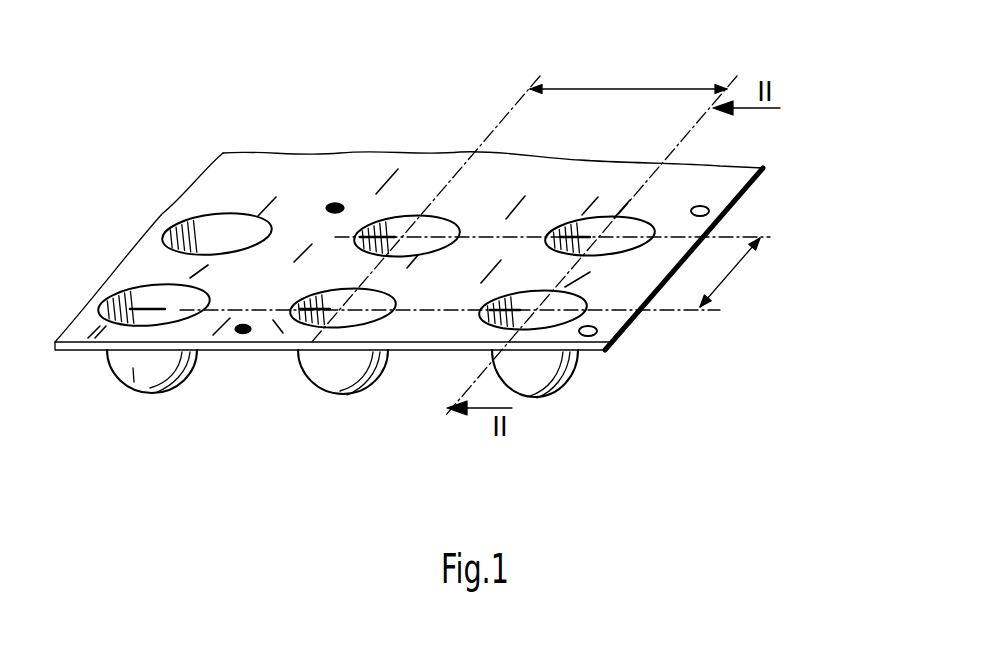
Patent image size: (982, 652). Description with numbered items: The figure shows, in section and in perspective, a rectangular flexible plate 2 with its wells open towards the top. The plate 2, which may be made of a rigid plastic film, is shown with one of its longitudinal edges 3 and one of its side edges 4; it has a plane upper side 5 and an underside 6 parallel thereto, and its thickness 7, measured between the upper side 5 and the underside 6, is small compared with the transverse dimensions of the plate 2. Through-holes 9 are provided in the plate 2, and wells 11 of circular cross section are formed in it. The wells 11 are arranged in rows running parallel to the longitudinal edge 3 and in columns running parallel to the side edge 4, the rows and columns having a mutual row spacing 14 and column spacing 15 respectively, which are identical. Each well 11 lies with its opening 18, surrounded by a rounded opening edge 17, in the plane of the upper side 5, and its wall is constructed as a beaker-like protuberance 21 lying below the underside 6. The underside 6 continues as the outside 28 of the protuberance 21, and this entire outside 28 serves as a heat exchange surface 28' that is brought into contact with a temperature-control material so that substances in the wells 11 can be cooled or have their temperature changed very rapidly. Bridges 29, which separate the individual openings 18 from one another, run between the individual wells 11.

The flexible plate 2 is at (368, 168).
The longitudinal edge 3 is at (220, 356).
The side edge 4 is at (615, 342).
The upper side 5 is at (280, 327).
The underside 6 is at (248, 366).
The thickness 7 is at (413, 364).
The through-holes 9 is at (708, 208).
The wells 11 is at (135, 305).
The row spacing 14 is at (734, 272).
The column spacing 15 is at (633, 89).
The rounded opening edge 17 is at (226, 216).
The opening 18 is at (200, 237).
The beaker-like protuberance 21 is at (112, 380).
The outside of the protuberance 28 is at (141, 439).
The heat exchange surface 28' is at (101, 435).
The bridges 29 is at (357, 267).